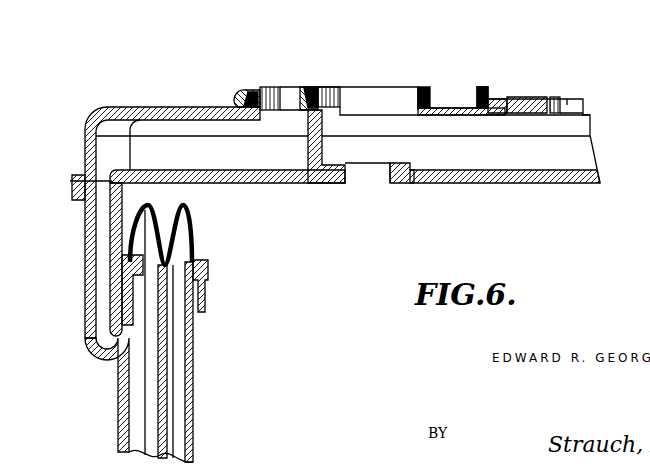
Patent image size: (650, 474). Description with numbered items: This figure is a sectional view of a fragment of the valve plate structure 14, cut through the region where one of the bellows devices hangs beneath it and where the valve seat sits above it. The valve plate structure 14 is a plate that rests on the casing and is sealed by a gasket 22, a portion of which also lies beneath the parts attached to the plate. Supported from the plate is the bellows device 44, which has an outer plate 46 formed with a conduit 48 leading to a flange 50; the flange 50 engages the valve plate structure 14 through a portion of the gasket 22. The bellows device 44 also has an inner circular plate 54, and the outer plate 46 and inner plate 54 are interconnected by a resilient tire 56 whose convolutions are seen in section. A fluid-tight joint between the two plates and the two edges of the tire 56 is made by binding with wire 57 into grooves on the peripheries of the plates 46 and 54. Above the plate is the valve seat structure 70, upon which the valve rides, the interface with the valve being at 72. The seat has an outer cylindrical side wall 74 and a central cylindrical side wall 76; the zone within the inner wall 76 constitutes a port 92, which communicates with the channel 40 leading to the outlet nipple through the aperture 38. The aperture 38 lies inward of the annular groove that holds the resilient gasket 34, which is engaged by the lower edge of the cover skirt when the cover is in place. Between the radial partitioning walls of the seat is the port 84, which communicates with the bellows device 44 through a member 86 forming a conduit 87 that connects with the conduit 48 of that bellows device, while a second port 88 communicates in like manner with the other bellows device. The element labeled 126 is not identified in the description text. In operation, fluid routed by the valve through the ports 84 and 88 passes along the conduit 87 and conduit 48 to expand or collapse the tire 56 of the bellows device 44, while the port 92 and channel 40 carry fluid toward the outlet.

The valve plate structure 14 is at (511, 183).
The gasket 22 is at (72, 180).
The resilient gasket 34 is at (532, 98).
The aperture 38 is at (553, 96).
The channel 40 is at (500, 161).
The bellows device 44 is at (172, 404).
The outer plate 46 is at (122, 387).
The conduit 48 is at (96, 258).
The flange 50 is at (75, 192).
The inner circular plate 54 is at (193, 365).
The resilient tire 56 is at (186, 207).
The wire 57 is at (128, 262).
The valve seat structure 70 is at (485, 100).
The interface 72 is at (482, 93).
The cylindrical side wall 74 is at (250, 92).
The central cylindrical side wall 76 is at (325, 95).
The port 84 is at (280, 95).
The member 86 is at (270, 163).
The conduit 87 is at (180, 171).
The port 88 is at (450, 100).
The port 92 is at (355, 118).
The step 126 is at (390, 185).